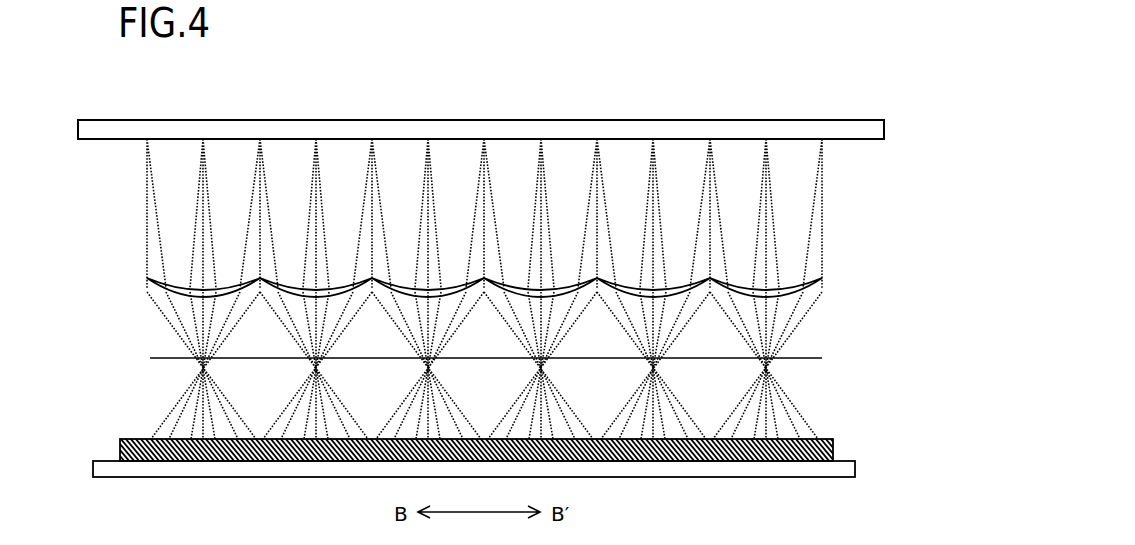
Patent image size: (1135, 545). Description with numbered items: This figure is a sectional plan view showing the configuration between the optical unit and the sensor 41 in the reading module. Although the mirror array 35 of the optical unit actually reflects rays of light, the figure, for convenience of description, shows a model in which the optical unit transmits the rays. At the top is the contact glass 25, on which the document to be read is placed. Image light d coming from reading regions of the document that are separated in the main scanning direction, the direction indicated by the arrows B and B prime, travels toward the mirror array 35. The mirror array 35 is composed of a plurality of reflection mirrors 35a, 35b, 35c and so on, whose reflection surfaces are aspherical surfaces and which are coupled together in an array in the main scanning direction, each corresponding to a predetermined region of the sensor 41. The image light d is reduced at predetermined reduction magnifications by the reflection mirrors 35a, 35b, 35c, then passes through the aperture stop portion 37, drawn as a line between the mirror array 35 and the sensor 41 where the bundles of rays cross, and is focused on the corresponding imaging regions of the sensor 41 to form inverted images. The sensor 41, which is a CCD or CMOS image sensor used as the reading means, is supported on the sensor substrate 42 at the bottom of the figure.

The contact glass 25 is at (825, 120).
The mirror array 35 is at (526, 309).
The reflection mirror 35a is at (810, 292).
The reflection mirror 35b is at (678, 292).
The reflection mirror 35c is at (565, 294).
The aperture stop portion 37 is at (170, 358).
The sensor 41 is at (120, 447).
The sensor substrate 42 is at (852, 460).
The image light d is at (823, 224).